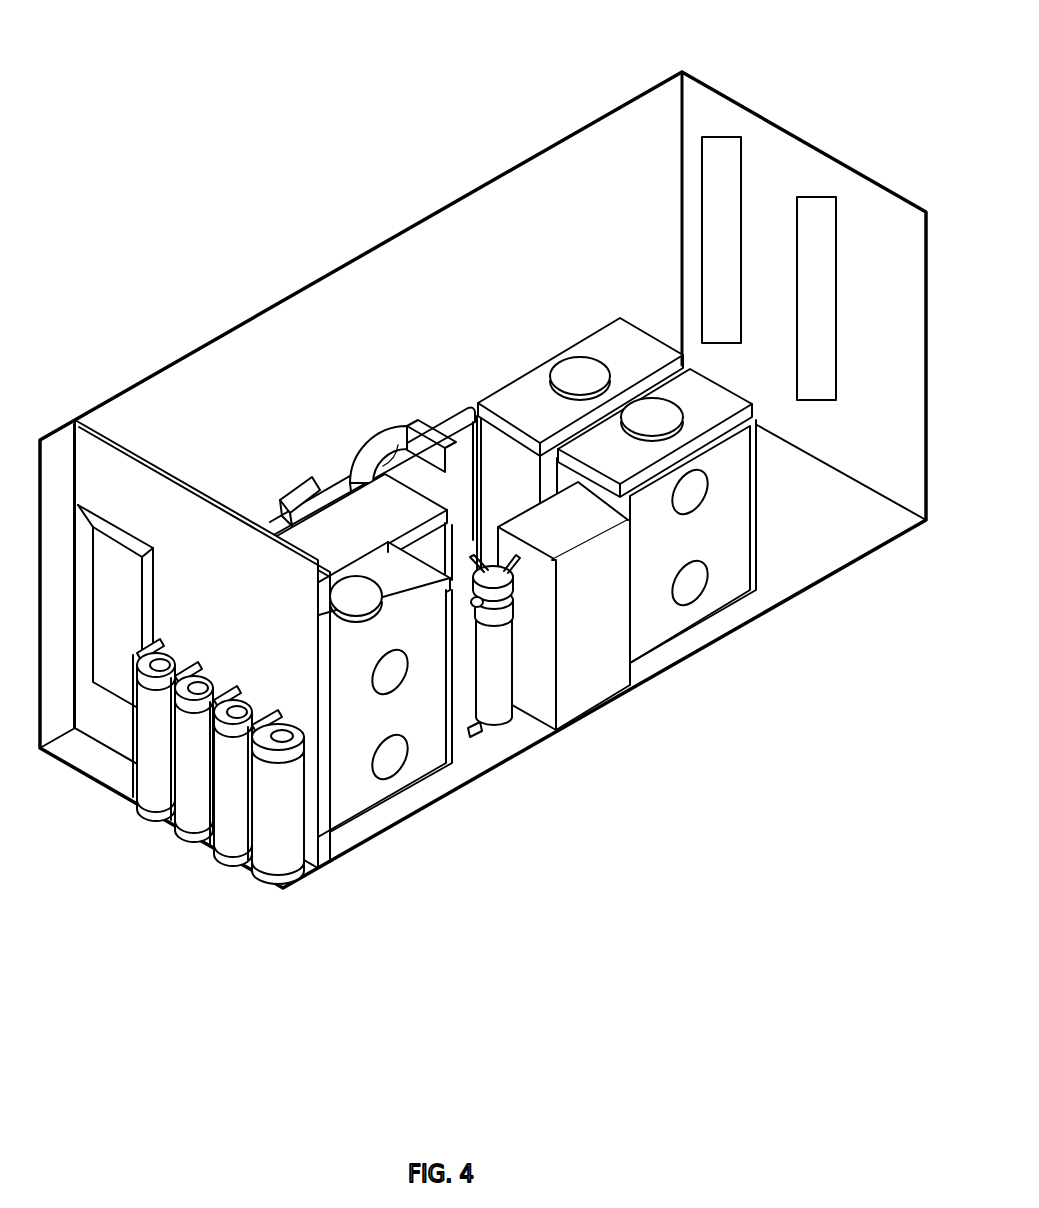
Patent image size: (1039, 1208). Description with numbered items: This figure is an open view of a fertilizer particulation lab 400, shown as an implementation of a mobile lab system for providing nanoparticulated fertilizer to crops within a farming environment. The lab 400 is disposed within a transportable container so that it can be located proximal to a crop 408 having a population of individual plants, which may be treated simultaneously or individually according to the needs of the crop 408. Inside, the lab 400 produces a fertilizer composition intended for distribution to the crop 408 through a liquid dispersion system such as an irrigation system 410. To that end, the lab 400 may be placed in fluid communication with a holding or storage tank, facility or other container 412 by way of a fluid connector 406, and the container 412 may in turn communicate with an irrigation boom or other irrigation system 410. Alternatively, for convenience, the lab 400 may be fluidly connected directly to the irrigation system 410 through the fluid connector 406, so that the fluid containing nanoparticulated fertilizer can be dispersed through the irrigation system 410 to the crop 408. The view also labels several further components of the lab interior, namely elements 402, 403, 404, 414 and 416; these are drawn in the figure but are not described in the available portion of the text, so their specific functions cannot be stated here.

The lab 400 is at (420, 260).
The window 402 is at (118, 612).
The pipe elbow 403 is at (389, 437).
The first box unit 404 is at (420, 763).
The fluid connector 406 is at (493, 688).
The crop 408 is at (575, 677).
The irrigation system 410 is at (723, 565).
The container 412 is at (160, 772).
The vents 414 is at (726, 162).
The mounting plate 416 is at (290, 492).